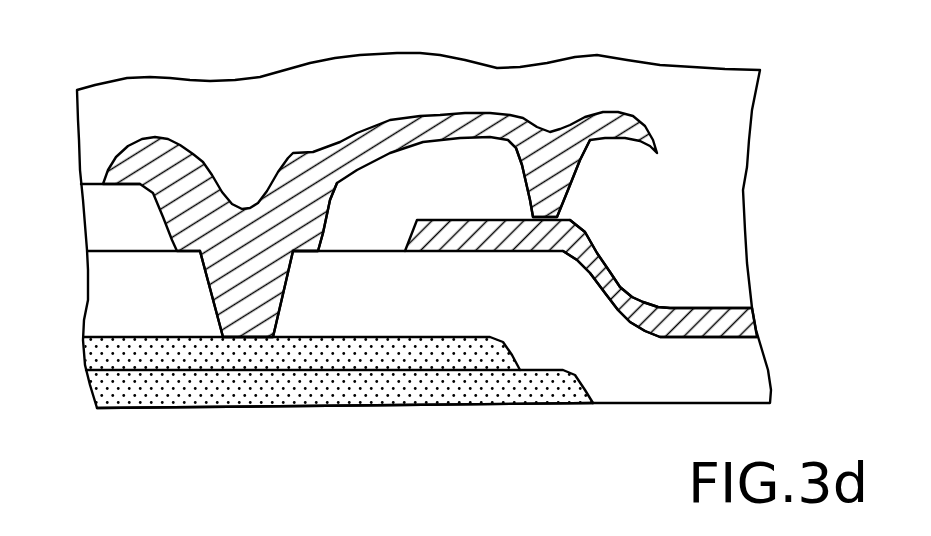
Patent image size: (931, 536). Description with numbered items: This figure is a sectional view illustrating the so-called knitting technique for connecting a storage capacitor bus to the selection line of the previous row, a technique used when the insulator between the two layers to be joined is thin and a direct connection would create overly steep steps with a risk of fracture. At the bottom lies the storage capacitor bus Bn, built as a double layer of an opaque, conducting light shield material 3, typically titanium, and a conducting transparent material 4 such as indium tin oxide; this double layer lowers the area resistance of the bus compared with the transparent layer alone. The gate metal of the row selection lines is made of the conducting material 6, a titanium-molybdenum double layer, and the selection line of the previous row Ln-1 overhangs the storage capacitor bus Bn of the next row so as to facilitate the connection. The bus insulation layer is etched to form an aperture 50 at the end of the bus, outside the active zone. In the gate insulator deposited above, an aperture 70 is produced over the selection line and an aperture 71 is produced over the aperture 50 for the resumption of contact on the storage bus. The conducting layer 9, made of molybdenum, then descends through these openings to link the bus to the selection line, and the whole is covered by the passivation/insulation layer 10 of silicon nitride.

The passivation/insulation layer 10 is at (717, 100).
The conducting layer 9 is at (340, 152).
The aperture above aperture 50 71 is at (307, 217).
The aperture above selection line 70 is at (548, 181).
The conducting material 6 is at (477, 227).
The aperture 50 is at (255, 305).
The conducting and transparent material 4 is at (113, 358).
The opaque material 3 is at (110, 395).
The selection line of the previous row Ln-1 is at (653, 300).
The storage capacitor bus Bn is at (352, 398).